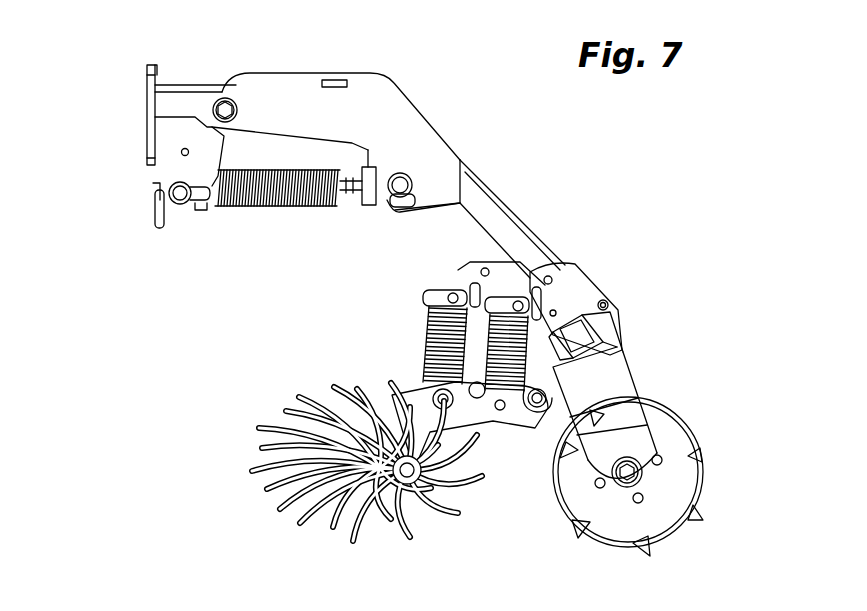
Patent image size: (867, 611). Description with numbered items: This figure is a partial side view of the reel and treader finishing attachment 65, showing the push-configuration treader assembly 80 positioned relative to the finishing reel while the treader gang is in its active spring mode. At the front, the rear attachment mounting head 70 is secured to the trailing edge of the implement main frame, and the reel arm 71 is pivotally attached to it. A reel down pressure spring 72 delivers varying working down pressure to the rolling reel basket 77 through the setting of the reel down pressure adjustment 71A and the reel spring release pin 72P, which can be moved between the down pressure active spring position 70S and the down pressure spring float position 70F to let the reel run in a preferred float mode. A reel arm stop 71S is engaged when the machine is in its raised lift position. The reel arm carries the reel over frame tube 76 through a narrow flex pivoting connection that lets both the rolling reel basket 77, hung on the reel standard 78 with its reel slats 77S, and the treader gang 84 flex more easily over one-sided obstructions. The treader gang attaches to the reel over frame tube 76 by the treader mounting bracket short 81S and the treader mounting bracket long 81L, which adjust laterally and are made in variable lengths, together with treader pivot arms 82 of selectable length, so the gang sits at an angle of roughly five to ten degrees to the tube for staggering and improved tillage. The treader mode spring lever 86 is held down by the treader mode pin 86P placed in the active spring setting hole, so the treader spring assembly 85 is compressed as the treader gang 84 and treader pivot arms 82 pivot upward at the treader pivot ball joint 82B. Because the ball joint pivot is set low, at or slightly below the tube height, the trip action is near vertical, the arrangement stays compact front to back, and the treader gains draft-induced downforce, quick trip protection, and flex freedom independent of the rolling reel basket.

The reel and treader finishing attachment 65 is at (678, 138).
The rear attachment mounting head 70 is at (147, 93).
The down pressure spring float position 70F is at (180, 151).
The down pressure active spring position 70S is at (157, 192).
The reel arm 71 is at (282, 73).
The reel arm stop 71S is at (340, 80).
The reel down pressure adjustment 71A is at (420, 193).
The reel down pressure spring 72 is at (267, 210).
The reel spring release pin 72P is at (157, 228).
The treader mounting bracket long 81L is at (483, 240).
The treader mounting bracket short 81S is at (590, 290).
The reel over frame tube 76 is at (615, 330).
The reel standard 78 is at (627, 377).
The rolling reel basket 77 is at (705, 448).
The reel slat 77S is at (680, 527).
The treader mode pin 86P is at (467, 283).
The treader mode spring lever 86 is at (424, 294).
The treader spring assembly 85 is at (427, 357).
The treader pivot arm 82 is at (497, 428).
The treader pivot ball joint 82B is at (537, 408).
The treader gang 84 is at (247, 413).
The treader assembly 80 is at (160, 482).